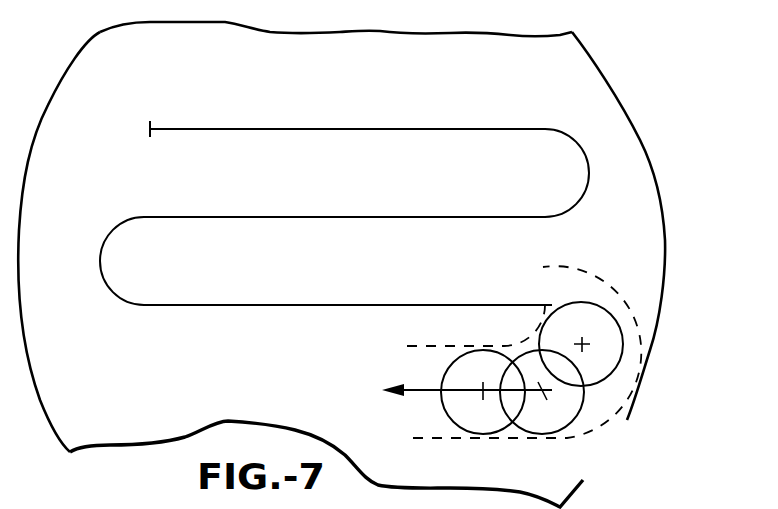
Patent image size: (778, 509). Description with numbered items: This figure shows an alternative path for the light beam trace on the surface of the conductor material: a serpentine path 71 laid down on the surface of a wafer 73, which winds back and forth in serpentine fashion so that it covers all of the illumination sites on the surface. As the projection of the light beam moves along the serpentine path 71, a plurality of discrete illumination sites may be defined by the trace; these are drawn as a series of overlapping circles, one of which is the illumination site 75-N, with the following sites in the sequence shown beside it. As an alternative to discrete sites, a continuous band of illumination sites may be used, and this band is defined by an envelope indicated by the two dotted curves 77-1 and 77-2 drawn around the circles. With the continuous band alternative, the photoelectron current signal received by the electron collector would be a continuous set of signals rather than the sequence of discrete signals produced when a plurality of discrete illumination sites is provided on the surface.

The serpentine path 71 is at (397, 128).
The wafer 73 is at (665, 242).
The discrete illumination site 75-N is at (603, 357).
The dotted curve 77-1 is at (450, 344).
The dotted curve 77-2 is at (452, 442).